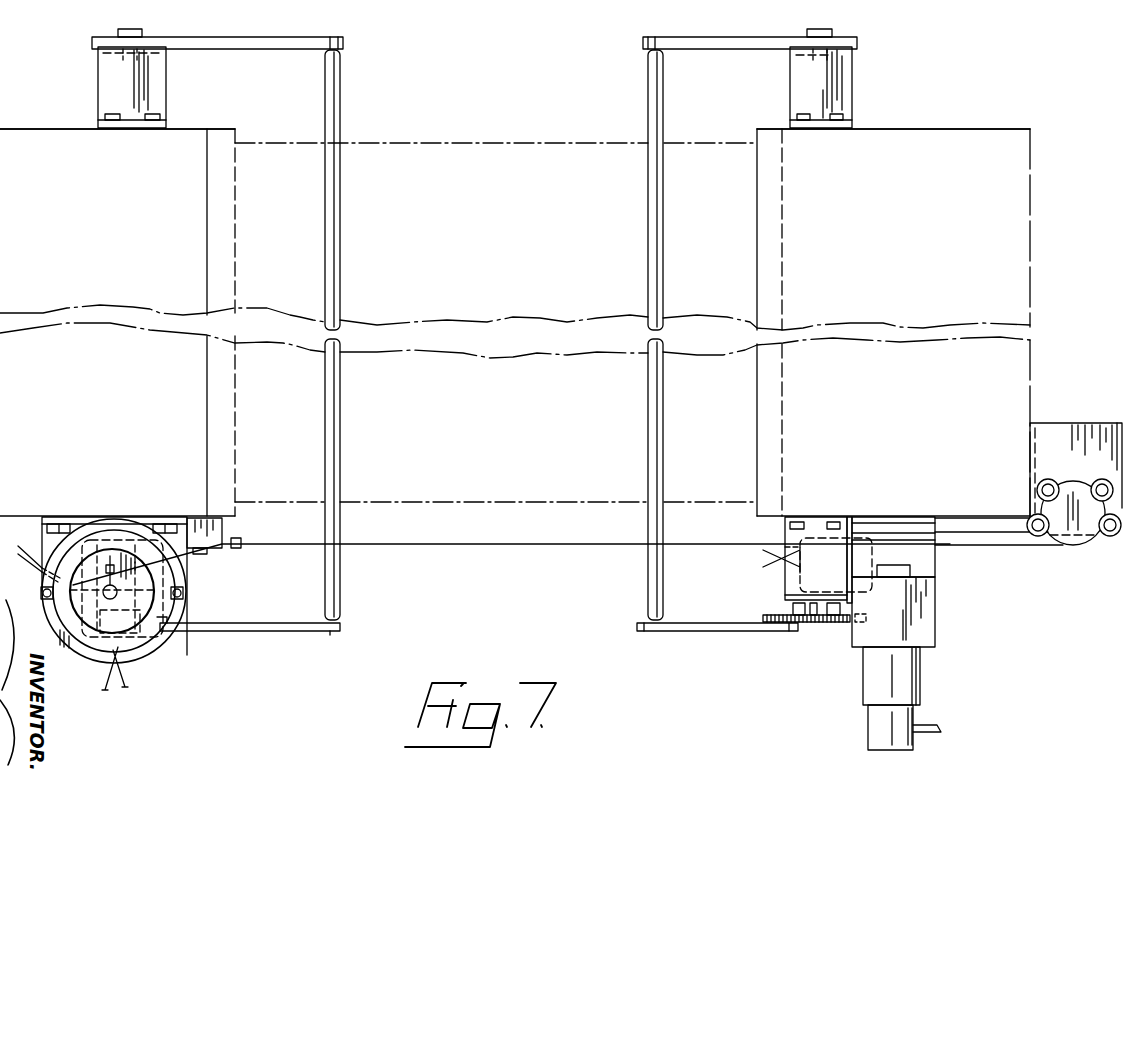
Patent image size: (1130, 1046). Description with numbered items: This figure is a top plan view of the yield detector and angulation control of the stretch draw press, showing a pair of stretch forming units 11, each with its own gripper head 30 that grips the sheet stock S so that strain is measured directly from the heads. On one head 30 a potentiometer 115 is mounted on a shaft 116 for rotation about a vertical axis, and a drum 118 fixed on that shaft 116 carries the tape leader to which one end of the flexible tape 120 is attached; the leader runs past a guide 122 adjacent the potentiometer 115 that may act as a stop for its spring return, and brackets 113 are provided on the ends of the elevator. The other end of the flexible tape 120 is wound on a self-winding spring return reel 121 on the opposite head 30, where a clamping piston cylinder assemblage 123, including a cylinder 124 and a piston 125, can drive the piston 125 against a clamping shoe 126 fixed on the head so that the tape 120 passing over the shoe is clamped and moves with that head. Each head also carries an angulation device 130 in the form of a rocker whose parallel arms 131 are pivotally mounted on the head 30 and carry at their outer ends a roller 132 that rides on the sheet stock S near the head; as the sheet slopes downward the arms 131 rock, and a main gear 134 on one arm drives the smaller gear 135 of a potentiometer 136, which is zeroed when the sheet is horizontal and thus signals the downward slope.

The stretch forming unit 11 is at (38, 124).
The gripper head 30 is at (515, 322).
The sheet stock S is at (513, 142).
The bracket 113 is at (225, 549).
The potentiometer 115 is at (147, 658).
The shaft 116 is at (120, 589).
The drum 118 is at (167, 620).
The flexible tape 120 is at (470, 544).
The self-winding spring return reel 121 is at (1068, 552).
The guide 122 is at (223, 526).
The clamping piston cylinder assemblage 123 is at (921, 670).
The cylinder 124 is at (870, 680).
The piston 125 is at (915, 563).
The clamping shoe 126 is at (900, 540).
The angulation device 130 is at (297, 35).
The arms 131 is at (228, 50).
The roller 132 is at (340, 222).
The main gear 134 is at (46, 578).
The smaller gear 135 is at (117, 614).
The potentiometer 136 is at (142, 536).